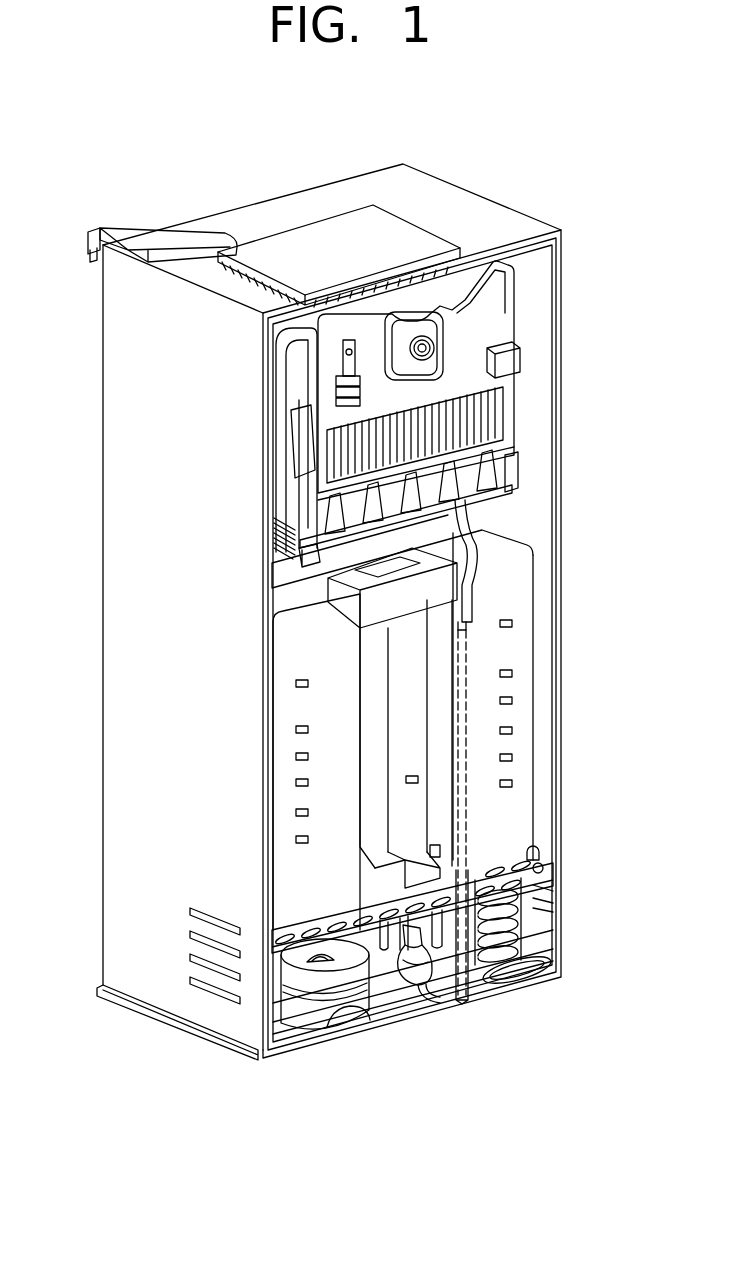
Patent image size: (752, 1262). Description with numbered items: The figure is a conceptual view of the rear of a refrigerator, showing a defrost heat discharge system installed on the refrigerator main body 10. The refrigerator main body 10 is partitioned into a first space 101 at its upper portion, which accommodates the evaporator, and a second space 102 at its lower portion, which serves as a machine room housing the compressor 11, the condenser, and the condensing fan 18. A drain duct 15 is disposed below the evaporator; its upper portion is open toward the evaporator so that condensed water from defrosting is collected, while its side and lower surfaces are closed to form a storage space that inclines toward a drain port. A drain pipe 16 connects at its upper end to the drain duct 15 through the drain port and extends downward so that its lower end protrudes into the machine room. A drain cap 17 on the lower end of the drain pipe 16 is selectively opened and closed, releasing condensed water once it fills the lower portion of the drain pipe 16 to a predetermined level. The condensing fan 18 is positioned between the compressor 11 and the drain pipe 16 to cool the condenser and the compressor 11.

The refrigerator main body 10 is at (134, 566).
The first space 101 is at (514, 402).
The drain duct 15 is at (506, 489).
The drain pipe 16 is at (478, 578).
The second space 102 is at (520, 928).
The drain cap 17 is at (461, 950).
The condensing fan 18 is at (412, 976).
The compressor 11 is at (310, 1017).